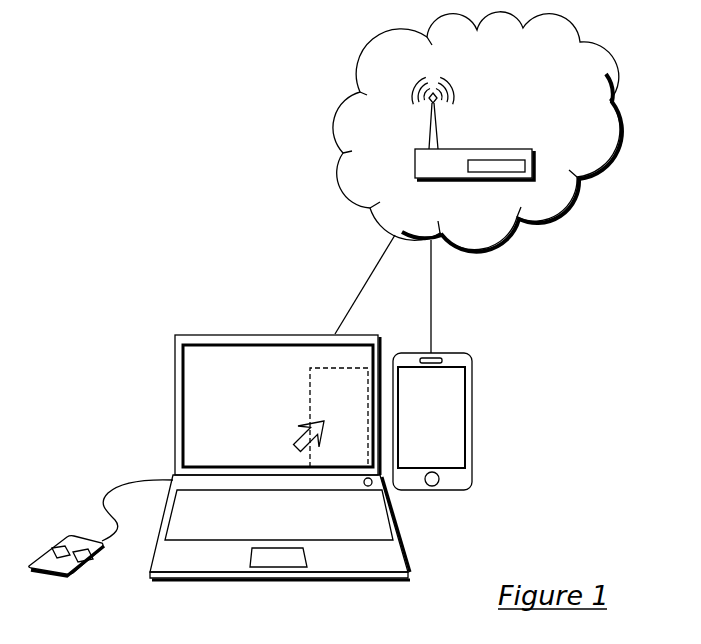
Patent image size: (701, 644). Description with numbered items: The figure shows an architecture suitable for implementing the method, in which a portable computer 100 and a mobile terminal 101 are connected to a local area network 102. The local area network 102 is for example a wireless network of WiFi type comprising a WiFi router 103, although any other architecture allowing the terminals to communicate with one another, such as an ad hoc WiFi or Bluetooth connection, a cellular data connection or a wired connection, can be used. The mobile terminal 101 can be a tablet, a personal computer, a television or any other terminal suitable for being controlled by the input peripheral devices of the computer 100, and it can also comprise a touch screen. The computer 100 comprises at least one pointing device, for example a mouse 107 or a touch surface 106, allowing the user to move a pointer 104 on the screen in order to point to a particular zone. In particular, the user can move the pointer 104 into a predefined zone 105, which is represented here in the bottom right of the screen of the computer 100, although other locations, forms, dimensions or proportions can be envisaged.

The portable computer 100 is at (207, 335).
The mobile terminal 101 is at (462, 351).
The local area network 102 is at (429, 42).
The WiFi router 103 is at (523, 149).
The pointer 104 is at (308, 419).
The predefined zone 105 is at (326, 395).
The touch surface 106 is at (292, 548).
The mouse 107 is at (91, 541).